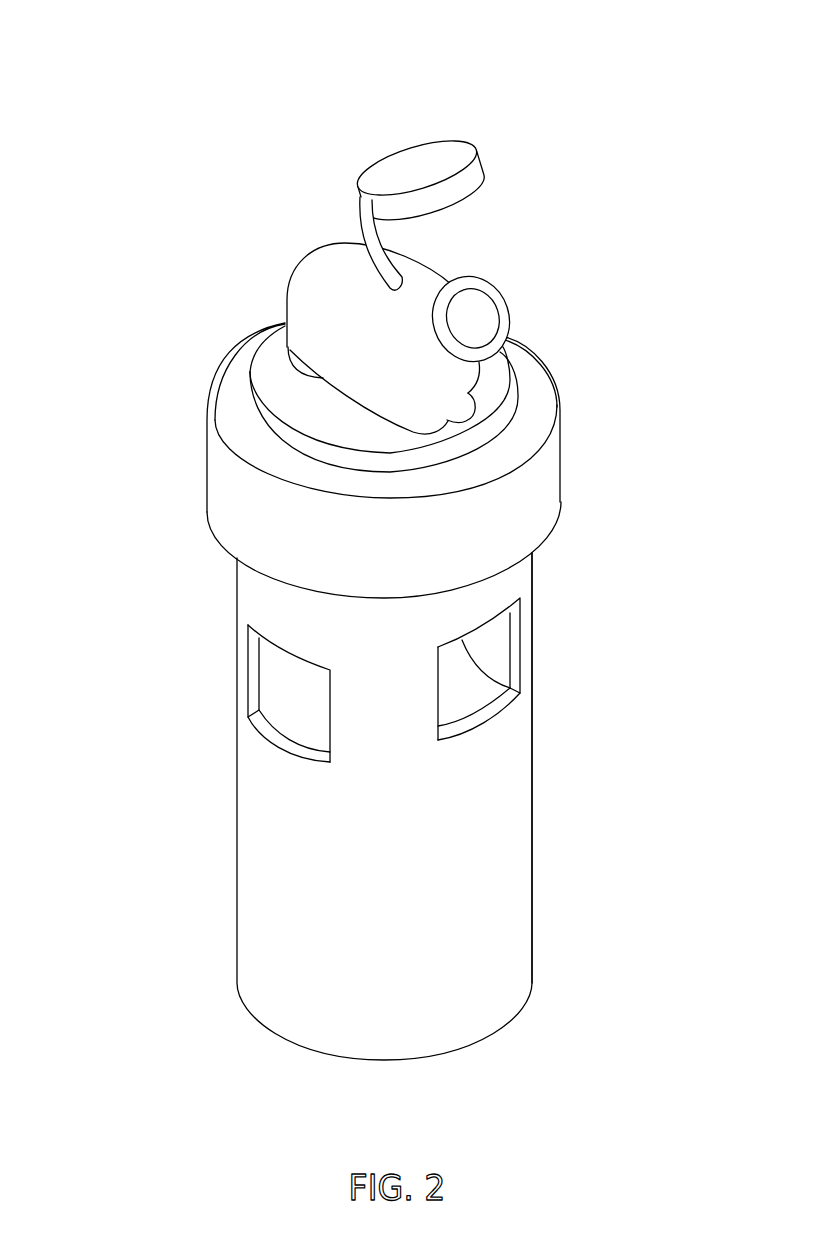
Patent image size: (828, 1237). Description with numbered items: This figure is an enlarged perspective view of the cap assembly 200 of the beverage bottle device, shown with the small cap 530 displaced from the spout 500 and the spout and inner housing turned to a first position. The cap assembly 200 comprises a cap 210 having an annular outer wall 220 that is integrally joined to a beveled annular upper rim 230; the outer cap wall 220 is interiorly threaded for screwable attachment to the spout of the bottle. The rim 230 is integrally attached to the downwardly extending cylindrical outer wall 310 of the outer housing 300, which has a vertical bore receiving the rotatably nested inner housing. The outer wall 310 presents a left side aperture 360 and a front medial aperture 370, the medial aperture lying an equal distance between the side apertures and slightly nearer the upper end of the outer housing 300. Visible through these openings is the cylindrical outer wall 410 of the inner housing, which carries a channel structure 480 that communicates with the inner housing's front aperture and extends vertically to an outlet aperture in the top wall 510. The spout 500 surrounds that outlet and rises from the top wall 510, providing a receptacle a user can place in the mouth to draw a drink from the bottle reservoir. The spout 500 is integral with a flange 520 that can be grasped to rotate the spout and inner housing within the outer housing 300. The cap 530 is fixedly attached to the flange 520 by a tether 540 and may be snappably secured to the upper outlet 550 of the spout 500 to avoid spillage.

The cap assembly 200 is at (366, 100).
The cap 210 is at (387, 504).
The annular outer wall 220 is at (527, 480).
The beveled annular upper rim 230 is at (528, 395).
The outer housing 300 is at (479, 806).
The outer wall 310 is at (485, 960).
The left side aperture 360 is at (274, 737).
The front medial aperture 370 is at (487, 720).
The outer wall 410 is at (260, 418).
The channel structure 480 is at (493, 653).
The spout 500 is at (374, 243).
The top wall 510 is at (278, 375).
The flange 520 is at (313, 293).
The cap 530 is at (433, 160).
The tether 540 is at (363, 220).
The upper outlet 550 is at (465, 284).